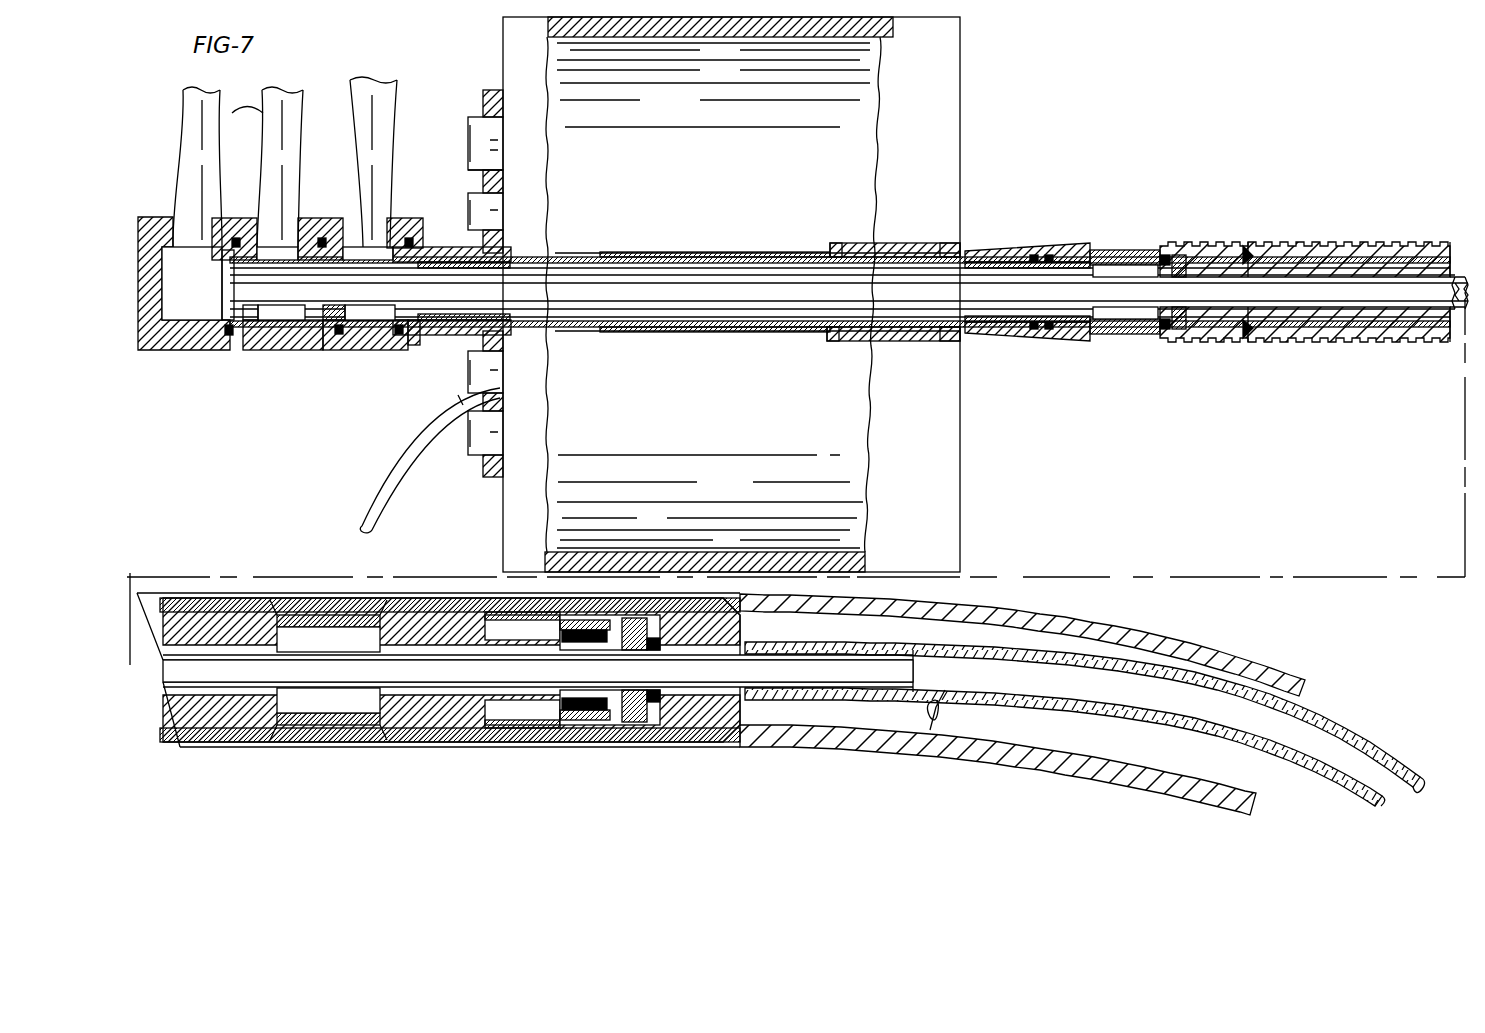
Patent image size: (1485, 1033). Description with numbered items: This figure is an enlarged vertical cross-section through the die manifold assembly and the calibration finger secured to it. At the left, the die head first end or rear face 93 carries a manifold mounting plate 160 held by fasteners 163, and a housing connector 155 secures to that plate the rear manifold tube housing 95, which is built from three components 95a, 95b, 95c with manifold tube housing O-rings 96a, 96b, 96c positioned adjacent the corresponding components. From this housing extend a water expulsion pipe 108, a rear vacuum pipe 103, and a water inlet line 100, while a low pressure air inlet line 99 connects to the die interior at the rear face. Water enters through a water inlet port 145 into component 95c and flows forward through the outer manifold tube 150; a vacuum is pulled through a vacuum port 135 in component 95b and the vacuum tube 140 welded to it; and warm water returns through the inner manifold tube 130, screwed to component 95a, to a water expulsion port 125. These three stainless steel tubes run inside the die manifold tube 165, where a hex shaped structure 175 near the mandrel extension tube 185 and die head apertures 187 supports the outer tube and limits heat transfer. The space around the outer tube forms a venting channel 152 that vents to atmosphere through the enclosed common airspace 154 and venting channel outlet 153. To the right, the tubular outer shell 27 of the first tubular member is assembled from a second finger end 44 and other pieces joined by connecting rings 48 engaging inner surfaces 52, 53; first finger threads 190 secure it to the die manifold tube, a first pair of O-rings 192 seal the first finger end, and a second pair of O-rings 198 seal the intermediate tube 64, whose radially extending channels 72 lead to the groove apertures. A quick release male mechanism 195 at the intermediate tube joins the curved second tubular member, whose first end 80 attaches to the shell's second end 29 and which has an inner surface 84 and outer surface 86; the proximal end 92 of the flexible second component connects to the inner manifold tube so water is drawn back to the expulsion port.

The tubular outer shell 27 is at (1327, 243).
The second end of the tubular outer shell 29 is at (533, 733).
The second finger end 44 is at (430, 748).
The connecting ring 48 is at (1133, 253).
The first finger end inner surface 52 is at (1107, 250).
The second finger end inner surface 53 is at (353, 733).
The intermediate tube 64 is at (1387, 263).
The radially extending channels 72 is at (1247, 247).
The first end of the second tubular member 80 is at (803, 733).
The inner surface of the second tubular member 84 is at (930, 730).
The outer surface of the second tubular member 86 is at (840, 748).
The proximal end of the second component 92 is at (767, 712).
The die head first end or rear face 93 is at (503, 515).
The rear manifold tube housing 95 is at (150, 358).
The rear manifold tube housing component 95a is at (170, 350).
The rear manifold tube housing component 95b is at (275, 95).
The rear manifold tube housing component 95c is at (343, 350).
The manifold tube housing O-ring 96a is at (237, 207).
The manifold tube housing O-ring 96b is at (327, 207).
The manifold tube housing O-ring 96c is at (407, 345).
The low pressure air inlet line 99 is at (395, 483).
The water inlet line 100 is at (363, 83).
The rear vacuum pipe 103 is at (263, 113).
The water expulsion pipe 108 is at (190, 103).
The water expulsion port 125 is at (225, 333).
The inner manifold tube 130 is at (777, 257).
The vacuum port 135 is at (280, 350).
The vacuum tube 140 is at (733, 257).
The water inlet port 145 is at (393, 200).
The outer manifold tube 150 is at (690, 253).
The venting channel 152 is at (680, 253).
The venting channel outlet 153 is at (467, 183).
The enclosed common airspace 154 is at (583, 170).
The housing connector 155 is at (442, 335).
The manifold mounting plate 160 is at (475, 480).
The fasteners 163 is at (477, 127).
The die manifold tube 165 is at (613, 253).
The hex shaped structure 175 is at (810, 327).
The mandrel extension tube 185 is at (910, 341).
The die head apertures 187 is at (950, 243).
The first finger threads 190 is at (1010, 251).
The first pair of O-rings 192 is at (1033, 333).
The quick release male mechanism 195 is at (587, 730).
The second pair of O-rings 198 is at (1180, 337).